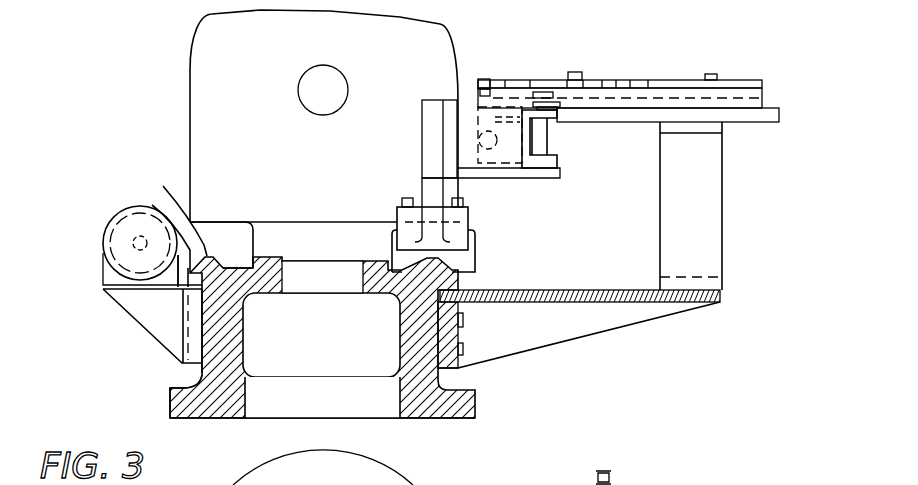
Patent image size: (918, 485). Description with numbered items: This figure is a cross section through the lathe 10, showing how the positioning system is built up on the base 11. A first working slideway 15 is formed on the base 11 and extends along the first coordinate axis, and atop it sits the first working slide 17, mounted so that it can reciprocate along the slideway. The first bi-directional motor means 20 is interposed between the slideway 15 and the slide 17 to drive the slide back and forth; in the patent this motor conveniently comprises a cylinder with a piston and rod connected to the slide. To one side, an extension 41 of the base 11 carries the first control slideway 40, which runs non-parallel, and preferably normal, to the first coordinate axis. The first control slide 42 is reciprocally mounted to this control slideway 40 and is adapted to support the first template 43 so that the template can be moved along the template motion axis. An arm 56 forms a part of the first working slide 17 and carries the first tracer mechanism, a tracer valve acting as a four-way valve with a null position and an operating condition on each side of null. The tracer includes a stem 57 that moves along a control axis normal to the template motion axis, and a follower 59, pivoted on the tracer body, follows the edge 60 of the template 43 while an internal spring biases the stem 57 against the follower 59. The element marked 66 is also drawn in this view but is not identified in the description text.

The lathe 10 is at (120, 345).
The base 11 is at (170, 378).
The first working slideway 15 is at (178, 206).
The first working slide 17 is at (212, 222).
The first bi-directional motor means 20 is at (100, 243).
The first control slideway 40 is at (780, 114).
The extension 41 is at (540, 332).
The first control slide 42 is at (765, 96).
The first template 43 is at (738, 82).
The arm 56 is at (422, 182).
The stem 57 is at (497, 163).
The follower 59 is at (490, 80).
The edge 60 is at (628, 87).
The fastener 66 is at (588, 483).